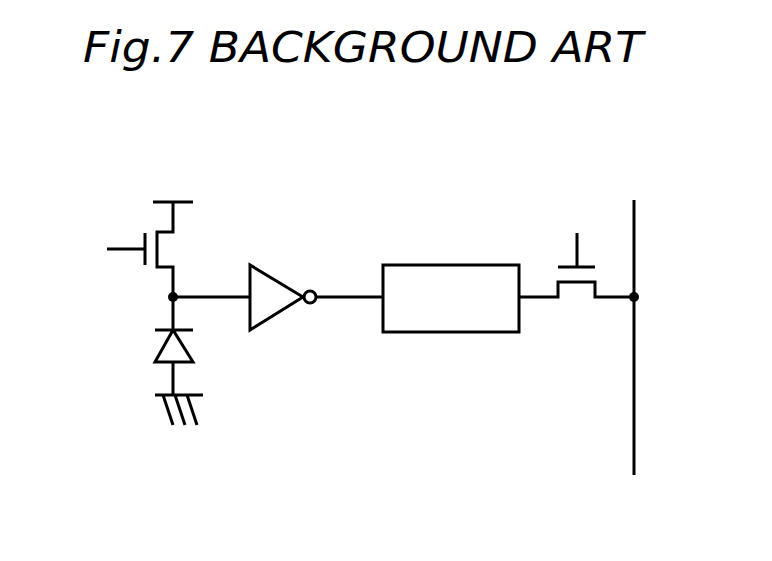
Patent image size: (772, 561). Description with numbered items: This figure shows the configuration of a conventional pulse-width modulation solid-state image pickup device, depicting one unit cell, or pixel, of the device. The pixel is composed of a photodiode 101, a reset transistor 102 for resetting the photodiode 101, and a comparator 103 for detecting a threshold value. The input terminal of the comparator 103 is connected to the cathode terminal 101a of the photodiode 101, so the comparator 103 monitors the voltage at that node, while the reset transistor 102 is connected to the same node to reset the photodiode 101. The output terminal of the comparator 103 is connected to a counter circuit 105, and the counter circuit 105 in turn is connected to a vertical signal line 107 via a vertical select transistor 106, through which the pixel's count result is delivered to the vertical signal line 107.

The photodiode 101 is at (152, 363).
The cathode terminal 101a is at (173, 315).
The reset transistor 102 is at (157, 225).
The comparator 103 is at (277, 275).
The counter circuit 105 is at (425, 263).
The vertical select transistor 106 is at (562, 262).
The vertical signal line 107 is at (634, 372).